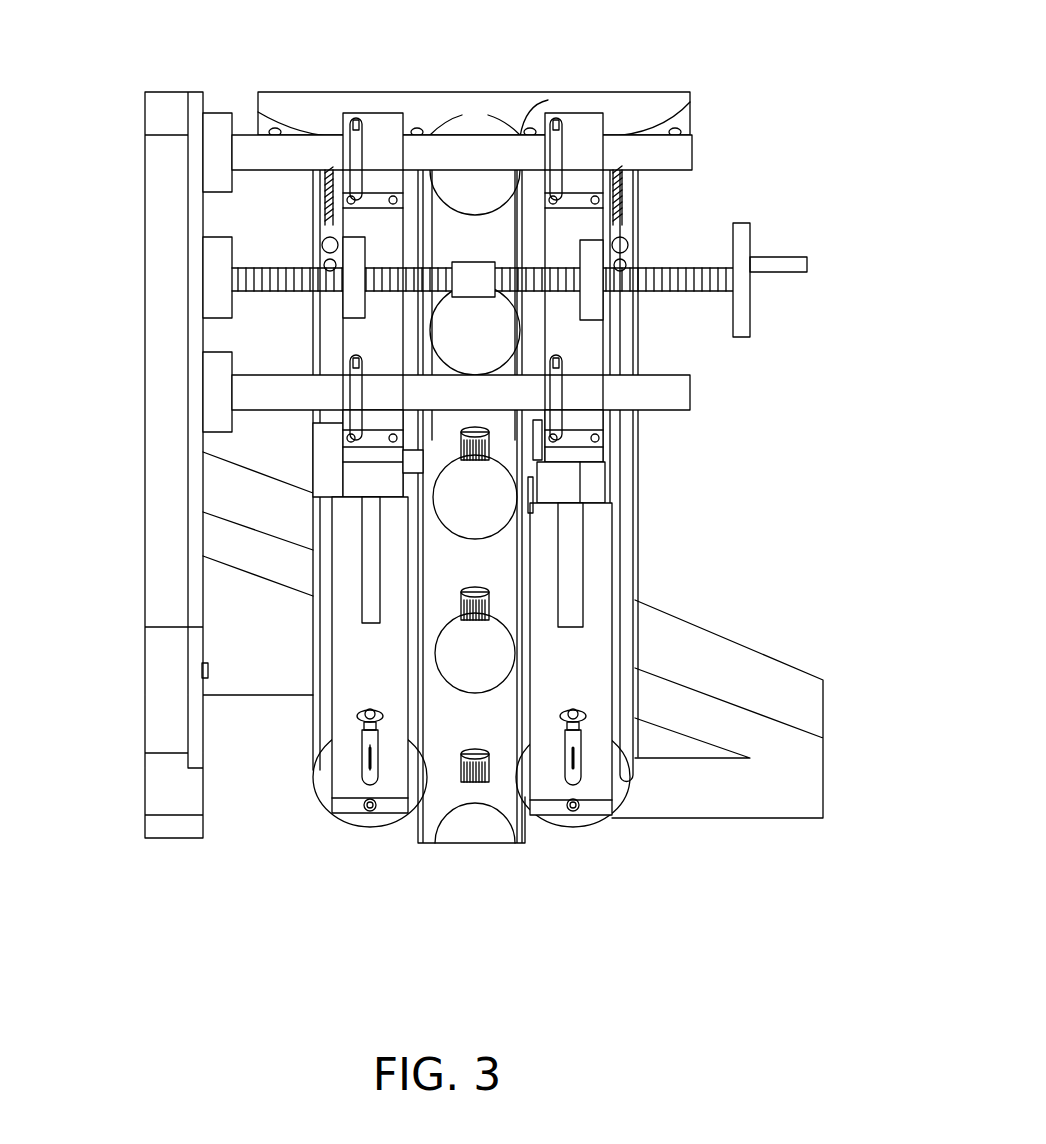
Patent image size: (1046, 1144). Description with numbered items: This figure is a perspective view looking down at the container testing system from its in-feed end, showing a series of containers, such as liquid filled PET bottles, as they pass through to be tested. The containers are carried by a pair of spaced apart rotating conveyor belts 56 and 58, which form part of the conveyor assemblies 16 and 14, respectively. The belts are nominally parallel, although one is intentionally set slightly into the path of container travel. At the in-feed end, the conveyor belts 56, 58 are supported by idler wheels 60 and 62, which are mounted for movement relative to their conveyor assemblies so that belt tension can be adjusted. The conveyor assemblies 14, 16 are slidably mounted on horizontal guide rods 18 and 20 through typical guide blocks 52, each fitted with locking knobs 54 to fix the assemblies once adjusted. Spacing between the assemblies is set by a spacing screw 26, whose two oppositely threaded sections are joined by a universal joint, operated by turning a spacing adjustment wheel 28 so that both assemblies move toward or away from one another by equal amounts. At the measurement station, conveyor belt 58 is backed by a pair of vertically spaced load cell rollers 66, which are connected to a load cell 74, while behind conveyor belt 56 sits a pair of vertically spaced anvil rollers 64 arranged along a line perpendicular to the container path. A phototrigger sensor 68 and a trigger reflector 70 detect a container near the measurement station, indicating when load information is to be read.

The conveyor assembly 14 is at (350, 685).
The conveyor assembly 16 is at (586, 664).
The horizontal guide rod 18 is at (296, 400).
The horizontal guide rod 20 is at (465, 148).
The spacing screw 26 is at (528, 270).
The spacing adjustment wheel 28 is at (742, 310).
The guide block 52 is at (590, 391).
The locking knob 54 is at (353, 360).
The conveyor belt 56 is at (584, 826).
The conveyor belt 58 is at (381, 827).
The idler wheel 60 is at (628, 785).
The idler wheel 62 is at (325, 758).
The anvil roller 64 is at (530, 527).
The load cell roller 66 is at (410, 543).
The phototrigger sensor 68 is at (342, 480).
The trigger reflector 70 is at (535, 473).
The load cell 74 is at (332, 527).